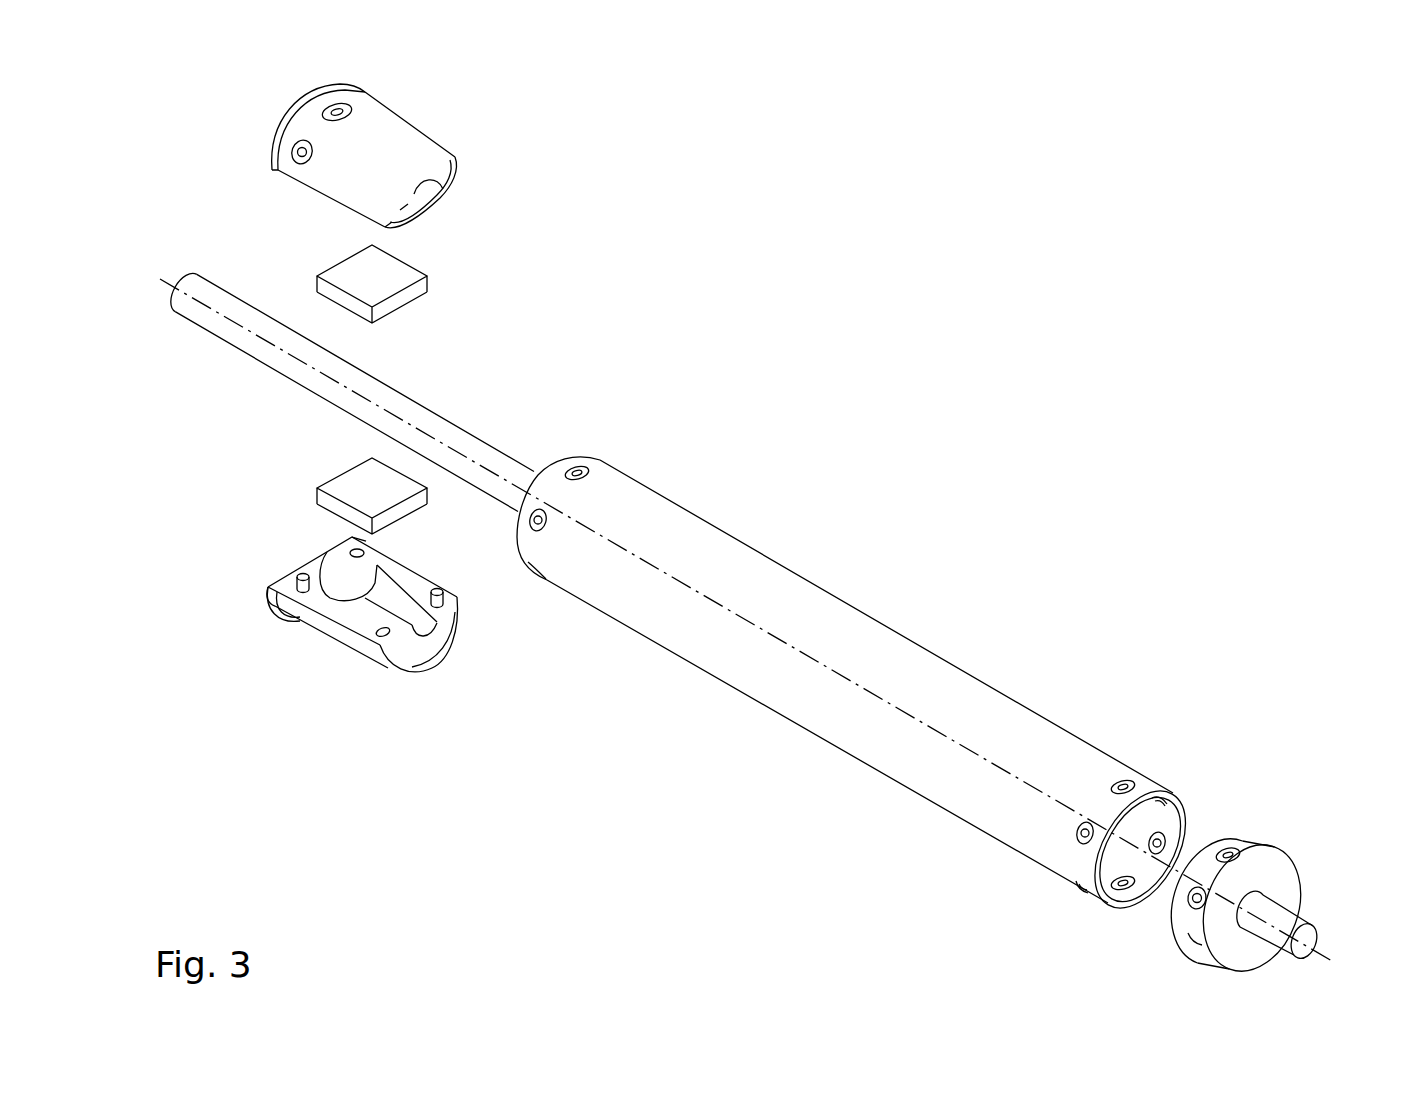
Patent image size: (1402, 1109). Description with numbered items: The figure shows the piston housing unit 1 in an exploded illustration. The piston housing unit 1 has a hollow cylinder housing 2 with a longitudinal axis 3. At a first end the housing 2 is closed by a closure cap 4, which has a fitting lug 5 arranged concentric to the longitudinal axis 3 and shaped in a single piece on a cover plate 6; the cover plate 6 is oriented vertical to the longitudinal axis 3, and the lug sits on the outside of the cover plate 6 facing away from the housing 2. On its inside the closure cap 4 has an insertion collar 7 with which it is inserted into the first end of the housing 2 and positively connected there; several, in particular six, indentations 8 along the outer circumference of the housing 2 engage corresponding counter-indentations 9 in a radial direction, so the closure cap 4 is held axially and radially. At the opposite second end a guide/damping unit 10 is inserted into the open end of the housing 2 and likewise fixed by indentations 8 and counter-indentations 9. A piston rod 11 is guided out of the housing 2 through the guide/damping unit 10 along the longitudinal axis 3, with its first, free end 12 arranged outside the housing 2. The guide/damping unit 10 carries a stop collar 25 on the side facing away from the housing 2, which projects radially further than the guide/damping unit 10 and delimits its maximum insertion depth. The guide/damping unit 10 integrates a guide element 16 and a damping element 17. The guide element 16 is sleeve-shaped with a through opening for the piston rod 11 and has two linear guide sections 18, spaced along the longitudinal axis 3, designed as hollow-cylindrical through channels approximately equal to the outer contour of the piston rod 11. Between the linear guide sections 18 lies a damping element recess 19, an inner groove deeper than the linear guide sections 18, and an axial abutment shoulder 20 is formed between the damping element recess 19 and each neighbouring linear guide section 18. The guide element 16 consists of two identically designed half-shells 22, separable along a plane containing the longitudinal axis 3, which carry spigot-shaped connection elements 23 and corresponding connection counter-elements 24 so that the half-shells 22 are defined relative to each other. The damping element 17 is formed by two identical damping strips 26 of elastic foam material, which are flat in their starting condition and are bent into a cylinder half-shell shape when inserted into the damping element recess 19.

The piston housing unit 1 is at (860, 623).
The hollow cylinder housing 2 is at (789, 577).
The longitudinal axis 3 is at (888, 698).
The closure cap 4 is at (1277, 831).
The fitting lug 5 is at (1296, 921).
The cover plate 6 is at (1282, 877).
The insertion collar 7 is at (1204, 882).
The indentations 8 is at (541, 513).
The counter-indentations 9 is at (334, 108).
The guide/damping unit 10 is at (268, 148).
The piston rod 11 is at (356, 392).
The free end 12 is at (281, 374).
The guide element 16 is at (355, 432).
The damping element 17 is at (315, 502).
The linear guide sections 18 is at (416, 194).
The damping element recess 19 is at (380, 642).
The axial abutment shoulder 20 is at (297, 610).
The half-shells 22 is at (355, 432).
The connection elements 23 is at (297, 569).
The connection counter-elements 24 is at (390, 634).
The stop collar 25 is at (286, 124).
The damping strips 26 is at (356, 383).